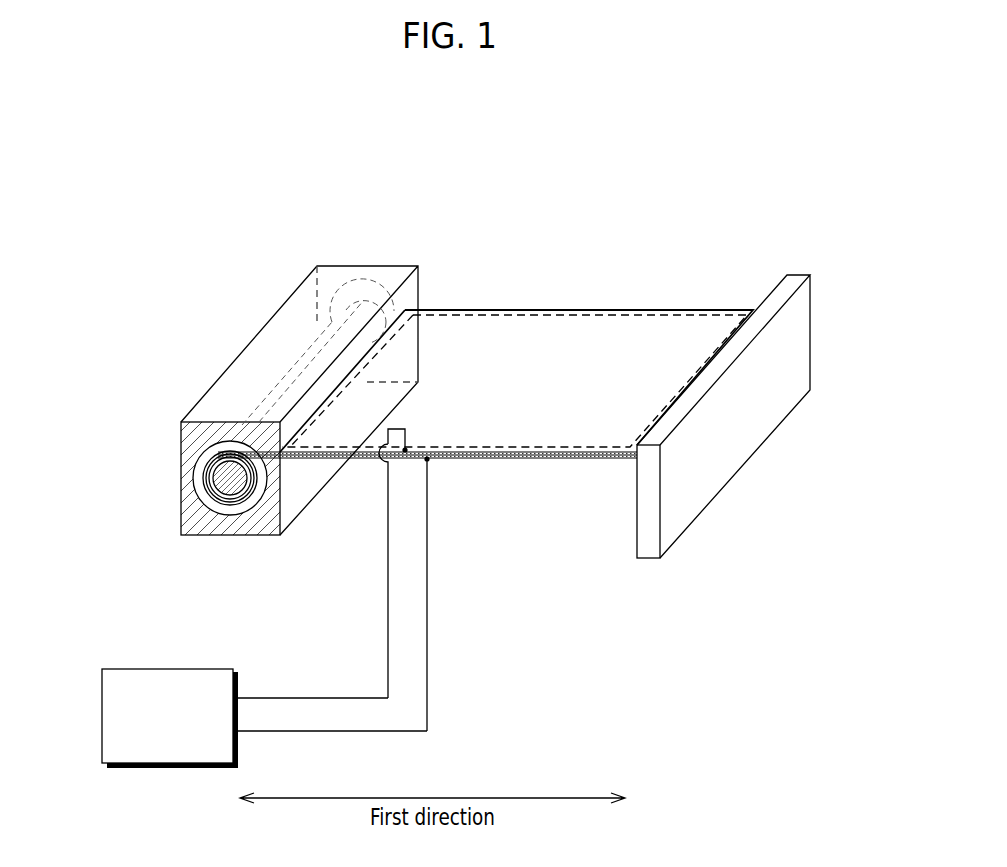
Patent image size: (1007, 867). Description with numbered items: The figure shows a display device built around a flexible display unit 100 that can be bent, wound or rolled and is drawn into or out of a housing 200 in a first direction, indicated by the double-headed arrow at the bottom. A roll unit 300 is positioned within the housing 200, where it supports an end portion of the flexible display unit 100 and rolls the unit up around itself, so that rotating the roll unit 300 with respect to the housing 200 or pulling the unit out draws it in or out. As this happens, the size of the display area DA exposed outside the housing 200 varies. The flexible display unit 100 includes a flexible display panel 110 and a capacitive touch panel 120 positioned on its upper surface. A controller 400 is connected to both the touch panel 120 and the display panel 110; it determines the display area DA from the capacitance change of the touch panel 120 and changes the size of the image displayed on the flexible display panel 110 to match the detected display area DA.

The flexible display unit 100 is at (485, 495).
The flexible display panel 110 is at (528, 460).
The touch panel 120 is at (591, 459).
The housing 200 is at (260, 353).
The roll unit 300 is at (230, 478).
The controller 400 is at (155, 669).
The display area DA is at (578, 313).